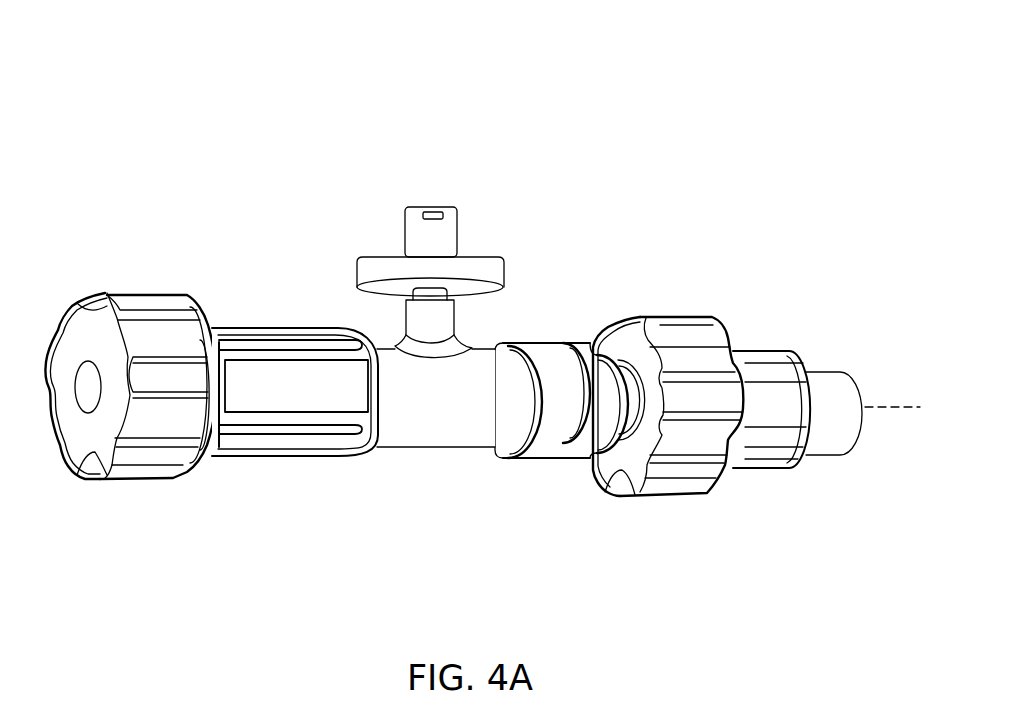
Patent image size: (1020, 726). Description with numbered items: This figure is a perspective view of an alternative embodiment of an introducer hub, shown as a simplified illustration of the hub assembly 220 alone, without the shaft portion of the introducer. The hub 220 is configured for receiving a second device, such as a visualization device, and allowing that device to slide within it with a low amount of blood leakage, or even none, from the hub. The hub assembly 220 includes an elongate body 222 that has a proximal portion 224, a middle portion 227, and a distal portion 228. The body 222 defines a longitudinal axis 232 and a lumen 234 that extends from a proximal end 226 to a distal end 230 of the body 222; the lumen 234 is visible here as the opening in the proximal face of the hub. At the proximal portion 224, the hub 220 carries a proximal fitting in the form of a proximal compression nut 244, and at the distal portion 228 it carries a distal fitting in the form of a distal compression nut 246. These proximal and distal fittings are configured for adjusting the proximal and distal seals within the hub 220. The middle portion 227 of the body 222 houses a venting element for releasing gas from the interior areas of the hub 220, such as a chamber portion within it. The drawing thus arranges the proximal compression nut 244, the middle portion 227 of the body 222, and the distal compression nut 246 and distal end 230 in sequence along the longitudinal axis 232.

The hub assembly 220 is at (187, 82).
The body 222 is at (550, 335).
The proximal portion 224 is at (58, 481).
The proximal end 226 is at (88, 328).
The middle portion 227 is at (189, 506).
The distal portion 228 is at (615, 529).
The distal end 230 is at (860, 385).
The longitudinal axis 232 is at (913, 413).
The lumen 234 is at (88, 393).
The proximal compression nut 244 is at (160, 310).
The distal compression nut 246 is at (657, 320).